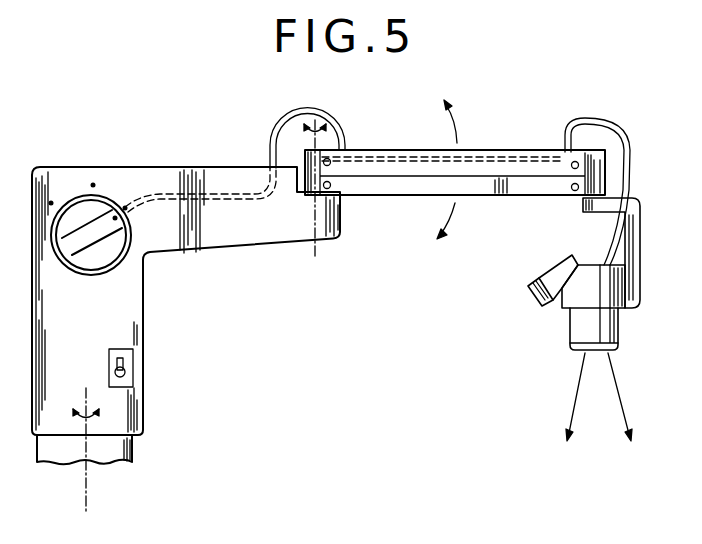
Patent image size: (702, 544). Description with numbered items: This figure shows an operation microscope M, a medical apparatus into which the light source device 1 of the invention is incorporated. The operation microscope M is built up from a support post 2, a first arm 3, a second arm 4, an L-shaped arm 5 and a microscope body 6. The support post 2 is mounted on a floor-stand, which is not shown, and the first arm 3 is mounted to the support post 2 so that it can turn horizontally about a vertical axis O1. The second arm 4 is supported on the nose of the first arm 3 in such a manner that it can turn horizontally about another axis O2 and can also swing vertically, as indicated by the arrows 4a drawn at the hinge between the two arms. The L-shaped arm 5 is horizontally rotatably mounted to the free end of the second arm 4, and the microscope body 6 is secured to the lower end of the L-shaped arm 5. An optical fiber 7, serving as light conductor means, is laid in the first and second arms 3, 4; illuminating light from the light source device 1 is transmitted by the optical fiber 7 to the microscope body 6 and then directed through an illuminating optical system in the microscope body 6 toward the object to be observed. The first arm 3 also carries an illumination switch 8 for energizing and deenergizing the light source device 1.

The light source device 1 is at (97, 212).
The support post 2 is at (133, 444).
The first arm 3 is at (230, 236).
The second arm 4 is at (496, 167).
The arrows 4a is at (342, 135).
The L-shaped arm 5 is at (630, 198).
The microscope body 6 is at (610, 327).
The optical fiber 7 is at (269, 148).
The illumination switch 8 is at (133, 357).
The operation microscope M is at (550, 146).
The axis O1 is at (86, 500).
The axis O2 is at (315, 253).